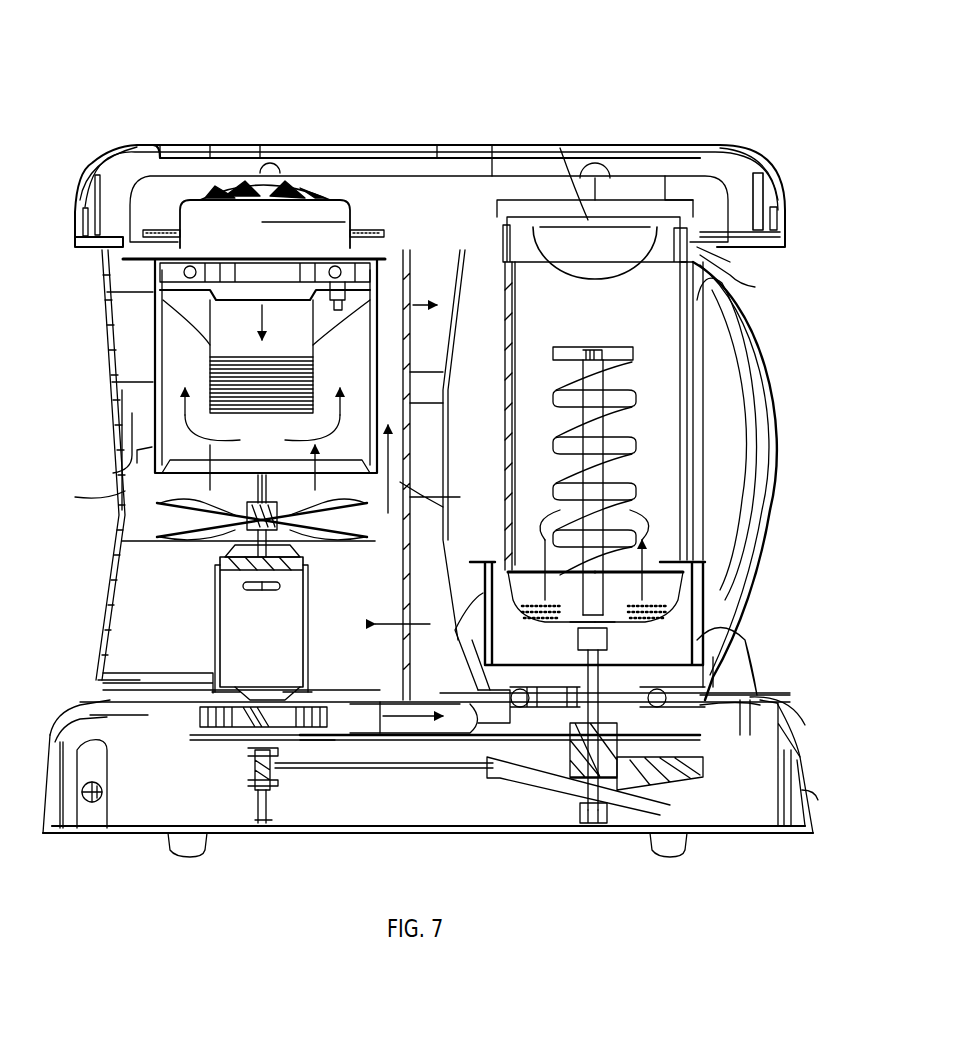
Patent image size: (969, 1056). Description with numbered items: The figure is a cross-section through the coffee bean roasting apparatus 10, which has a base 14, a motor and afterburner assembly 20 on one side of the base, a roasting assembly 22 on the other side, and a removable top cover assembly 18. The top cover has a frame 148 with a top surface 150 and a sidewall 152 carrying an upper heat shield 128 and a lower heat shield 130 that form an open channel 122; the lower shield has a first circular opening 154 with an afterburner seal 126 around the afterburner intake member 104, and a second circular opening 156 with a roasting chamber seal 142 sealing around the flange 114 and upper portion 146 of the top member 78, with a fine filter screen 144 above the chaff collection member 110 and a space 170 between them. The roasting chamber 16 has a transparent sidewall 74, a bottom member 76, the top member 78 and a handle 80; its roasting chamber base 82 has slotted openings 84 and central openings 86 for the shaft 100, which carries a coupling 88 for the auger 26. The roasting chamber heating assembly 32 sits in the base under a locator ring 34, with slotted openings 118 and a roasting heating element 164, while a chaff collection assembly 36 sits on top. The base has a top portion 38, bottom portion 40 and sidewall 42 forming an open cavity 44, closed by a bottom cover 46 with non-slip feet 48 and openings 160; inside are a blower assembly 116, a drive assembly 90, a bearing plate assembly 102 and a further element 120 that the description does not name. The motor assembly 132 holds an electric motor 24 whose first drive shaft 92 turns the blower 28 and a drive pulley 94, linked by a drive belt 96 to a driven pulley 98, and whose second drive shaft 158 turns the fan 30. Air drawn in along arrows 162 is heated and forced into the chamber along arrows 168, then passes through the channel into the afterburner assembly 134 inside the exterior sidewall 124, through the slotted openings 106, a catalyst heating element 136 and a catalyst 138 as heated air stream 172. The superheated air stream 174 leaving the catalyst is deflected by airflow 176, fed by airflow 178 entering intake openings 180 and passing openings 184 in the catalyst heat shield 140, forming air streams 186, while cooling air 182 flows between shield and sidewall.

The roasting apparatus 10 is at (312, 97).
The base 14 is at (775, 701).
The roasting chamber 16 is at (514, 441).
The top cover assembly 18 is at (700, 142).
The motor and afterburner assembly 20 is at (98, 339).
The roasting assembly 22 is at (775, 351).
The electric motor 24 is at (220, 593).
The auger 26 is at (594, 459).
The blower 28 is at (312, 701).
The fan 30 is at (130, 521).
The roasting chamber heating assembly 32 is at (705, 681).
The locator ring 34 is at (760, 691).
The chaff collection assembly 36 is at (790, 266).
The top portion 38 is at (90, 706).
The bottom portion 40 is at (811, 834).
The sidewall 42 is at (808, 761).
The open cavity 44 is at (720, 801).
The bottom cover 46 is at (757, 827).
The non-slip feet 48 is at (185, 859).
The sidewall 74 is at (514, 383).
The bottom member 76 is at (483, 593).
The top member 78 is at (734, 271).
The handle 80 is at (770, 413).
The roasting chamber base 82 is at (708, 546).
The slotted openings 84 is at (635, 649).
The openings 86 is at (565, 653).
The coupling 88 is at (575, 496).
The drive assembly 90 is at (428, 785).
The first drive shaft 92 is at (262, 801).
The drive pulley 94 is at (250, 769).
The drive belt 96 is at (385, 741).
The driven pulley 98 is at (483, 763).
The shaft 100 is at (590, 714).
The bearing plate assembly 102 is at (85, 716).
The afterburner intake member 104 is at (165, 145).
The slotted openings 106 is at (212, 145).
The chaff collection member 110 is at (605, 269).
The flange 114 is at (480, 260).
The blower assembly 116 is at (128, 690).
The slotted openings 118 is at (702, 656).
The screw 120 is at (78, 801).
The open channel 122 is at (452, 178).
The exterior sidewall 124 is at (118, 469).
The afterburner seal 126 is at (378, 201).
The upper heat shield 128 is at (724, 145).
The lower heat shield 130 is at (437, 145).
The motor assembly 132 is at (118, 613).
The afterburner assembly 134 is at (130, 357).
The catalyst heating element 136 is at (192, 265).
The catalyst 138 is at (153, 369).
The catalyst heat shield 140 is at (149, 477).
The roasting chamber seal 142 is at (675, 212).
The fine filter screen 144 is at (614, 197).
The upper portion 146 is at (493, 145).
The frame 148 is at (138, 145).
The top surface 150 is at (352, 145).
The sidewall 152 is at (773, 207).
The first circular opening 154 is at (123, 262).
The second circular opening 156 is at (718, 229).
The second drive shaft 158 is at (275, 531).
The openings 160 is at (262, 827).
The arrows 162 is at (222, 753).
The roasting heating element 164 is at (700, 718).
The arrows 168 is at (540, 546).
The space 170 is at (560, 148).
The heated air stream 172 is at (213, 331).
The superheated air stream 174 is at (150, 404).
The airflow 176 is at (318, 483).
The airflow 178 is at (413, 627).
The intake openings 180 is at (410, 295).
The cooling air 182 is at (90, 494).
The openings 184 is at (172, 463).
The air streams 186 is at (343, 346).